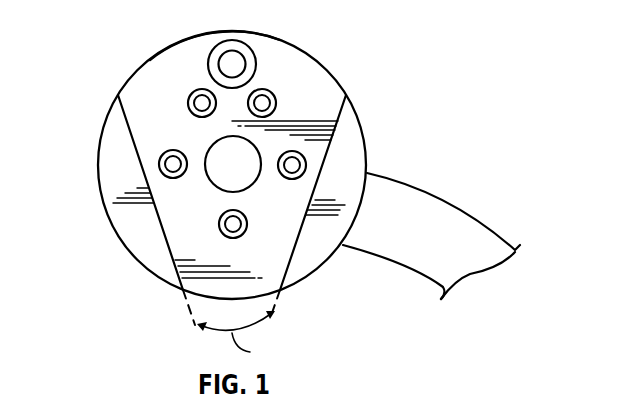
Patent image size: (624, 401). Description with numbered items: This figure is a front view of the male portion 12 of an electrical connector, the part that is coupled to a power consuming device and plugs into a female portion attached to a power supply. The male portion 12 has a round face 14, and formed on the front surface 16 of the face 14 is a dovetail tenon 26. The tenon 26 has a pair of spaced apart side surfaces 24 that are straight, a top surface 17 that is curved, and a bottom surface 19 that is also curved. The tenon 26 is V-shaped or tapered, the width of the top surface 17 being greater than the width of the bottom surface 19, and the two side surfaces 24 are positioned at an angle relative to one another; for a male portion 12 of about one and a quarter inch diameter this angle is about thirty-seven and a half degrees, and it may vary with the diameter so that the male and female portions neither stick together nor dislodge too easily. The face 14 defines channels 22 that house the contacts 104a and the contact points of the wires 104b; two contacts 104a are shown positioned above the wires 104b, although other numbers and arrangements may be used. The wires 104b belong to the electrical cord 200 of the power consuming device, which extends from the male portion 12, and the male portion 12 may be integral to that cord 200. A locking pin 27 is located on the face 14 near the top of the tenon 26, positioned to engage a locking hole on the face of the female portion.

The male portion 12 is at (467, 74).
The face 14 is at (128, 236).
The front surface 16 is at (332, 244).
The top surface 17 is at (169, 45).
The bottom surface 19 is at (263, 298).
The channels 22 is at (277, 101).
The side surfaces 24 is at (308, 278).
The dovetail tenon 26 is at (107, 132).
The locking pin 27 is at (234, 56).
The contacts 104a is at (188, 102).
The wires 104b is at (160, 165).
The electrical cord 200 is at (478, 231).